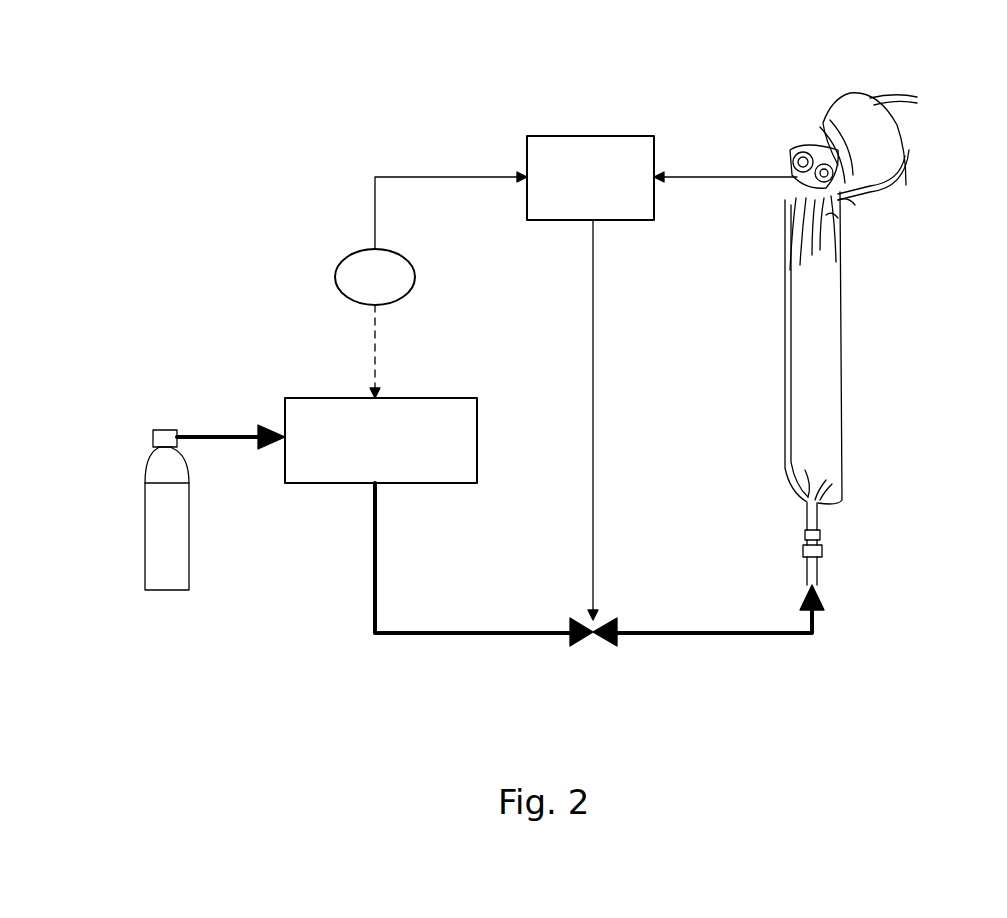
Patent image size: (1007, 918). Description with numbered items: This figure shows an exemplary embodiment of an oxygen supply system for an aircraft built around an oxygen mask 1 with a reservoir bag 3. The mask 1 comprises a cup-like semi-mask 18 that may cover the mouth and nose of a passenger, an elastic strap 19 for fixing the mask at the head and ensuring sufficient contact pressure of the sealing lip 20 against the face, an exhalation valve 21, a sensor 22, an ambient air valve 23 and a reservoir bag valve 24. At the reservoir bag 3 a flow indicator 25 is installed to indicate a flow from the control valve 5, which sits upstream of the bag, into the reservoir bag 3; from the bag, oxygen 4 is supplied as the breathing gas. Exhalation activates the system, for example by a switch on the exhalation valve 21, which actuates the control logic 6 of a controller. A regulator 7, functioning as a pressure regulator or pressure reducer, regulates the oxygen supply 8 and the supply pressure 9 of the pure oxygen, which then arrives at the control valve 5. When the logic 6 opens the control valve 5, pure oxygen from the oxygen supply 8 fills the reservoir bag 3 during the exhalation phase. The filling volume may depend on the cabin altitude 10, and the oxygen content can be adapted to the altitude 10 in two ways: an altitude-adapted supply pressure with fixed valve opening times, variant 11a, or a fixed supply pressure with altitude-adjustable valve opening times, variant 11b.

The oxygen mask 1 is at (692, 47).
The reservoir bag 3 is at (826, 378).
The oxygen 4 is at (205, 434).
The control valve 5 is at (593, 652).
The control logic 6 is at (549, 134).
The regulator 7 is at (432, 397).
The oxygen supply 8 is at (198, 545).
The supply pressure 9 is at (440, 628).
The cabin altitude 10 is at (375, 277).
The variant 1 11a is at (372, 349).
The variant 2 11b is at (372, 216).
The semi-mask 18 is at (838, 113).
The elastic strap 19 is at (886, 95).
The sealing lip 20 is at (893, 121).
The exhalation valve 21 is at (800, 143).
The sensor 22 is at (792, 150).
The ambient air valve 23 is at (843, 202).
The reservoir bag valve 24 is at (830, 222).
The flow indicator 25 is at (826, 548).